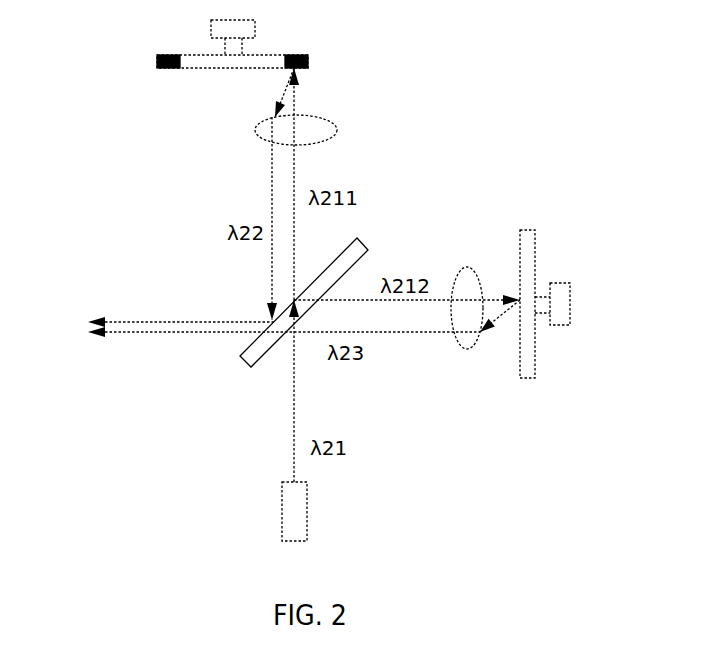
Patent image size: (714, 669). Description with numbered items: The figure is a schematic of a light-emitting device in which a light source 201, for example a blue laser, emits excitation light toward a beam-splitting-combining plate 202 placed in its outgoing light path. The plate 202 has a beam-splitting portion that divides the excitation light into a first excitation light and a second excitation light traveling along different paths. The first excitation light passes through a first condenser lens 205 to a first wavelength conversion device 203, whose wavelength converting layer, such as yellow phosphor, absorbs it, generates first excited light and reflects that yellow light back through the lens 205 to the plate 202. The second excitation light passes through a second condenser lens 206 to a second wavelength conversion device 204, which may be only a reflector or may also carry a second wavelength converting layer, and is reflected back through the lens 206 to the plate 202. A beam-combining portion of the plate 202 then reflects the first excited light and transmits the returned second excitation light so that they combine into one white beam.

The light source 201 is at (288, 508).
The beam-splitting-combining plate 202 is at (252, 362).
The first wavelength conversion device 203 is at (170, 68).
The second wavelength conversion device 204 is at (530, 378).
The first condenser lens 205 is at (267, 130).
The second condenser lens 206 is at (470, 345).